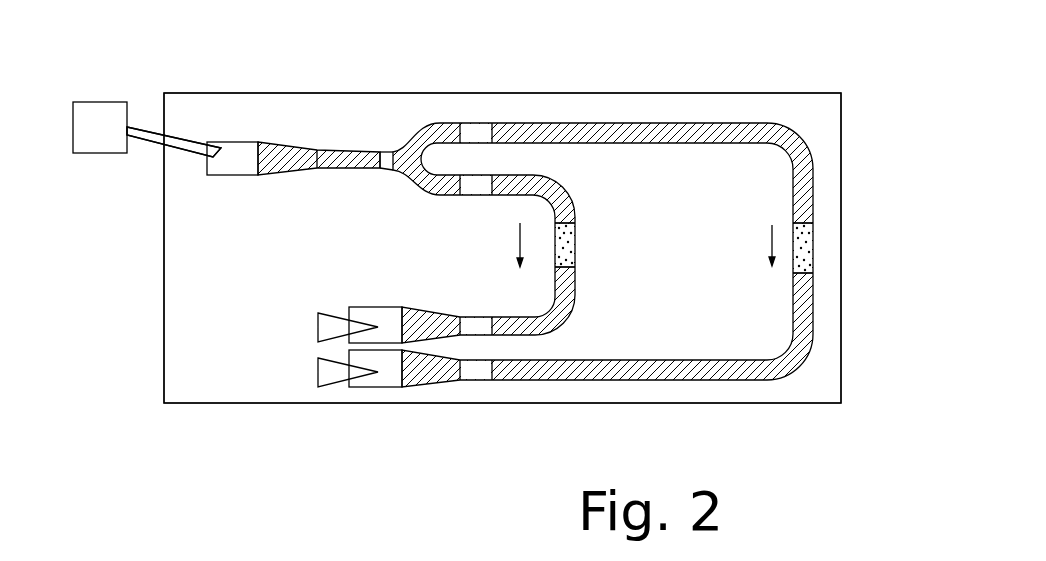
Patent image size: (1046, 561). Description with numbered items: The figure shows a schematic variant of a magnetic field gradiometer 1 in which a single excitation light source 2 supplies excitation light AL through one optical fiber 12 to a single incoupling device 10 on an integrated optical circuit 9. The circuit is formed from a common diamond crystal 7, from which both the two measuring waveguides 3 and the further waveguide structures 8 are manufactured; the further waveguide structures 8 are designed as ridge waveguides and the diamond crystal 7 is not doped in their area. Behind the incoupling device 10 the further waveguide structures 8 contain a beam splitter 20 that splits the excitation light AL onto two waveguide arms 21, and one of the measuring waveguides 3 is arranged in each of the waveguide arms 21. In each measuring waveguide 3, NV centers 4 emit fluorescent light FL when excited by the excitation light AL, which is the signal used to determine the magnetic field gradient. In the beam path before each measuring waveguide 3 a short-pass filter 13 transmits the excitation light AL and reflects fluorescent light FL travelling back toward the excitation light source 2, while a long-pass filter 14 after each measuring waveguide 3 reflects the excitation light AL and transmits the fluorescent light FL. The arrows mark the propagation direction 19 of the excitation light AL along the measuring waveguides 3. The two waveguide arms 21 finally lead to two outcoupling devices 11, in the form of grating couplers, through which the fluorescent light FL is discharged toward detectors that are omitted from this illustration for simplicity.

The magnetic field gradiometer 1 is at (133, 193).
The excitation light source 2 is at (97, 101).
The measuring waveguide 3 is at (574, 230).
The NV centers 4 is at (580, 248).
The diamond crystal 7 is at (803, 93).
The integrated optical circuit 9 is at (803, 93).
The further waveguide structures 8 is at (375, 180).
The incoupling device 10 is at (238, 155).
The outcoupling device 11 is at (393, 332).
The optical fiber 12 is at (138, 124).
The short-pass filter 13 is at (482, 185).
The long-pass filter 14 is at (483, 323).
The propagation direction 19 is at (518, 232).
The beam splitter 20 is at (398, 172).
The waveguide arm 21 is at (552, 170).
The excitation light AL is at (200, 145).
The fluorescent light FL is at (337, 333).